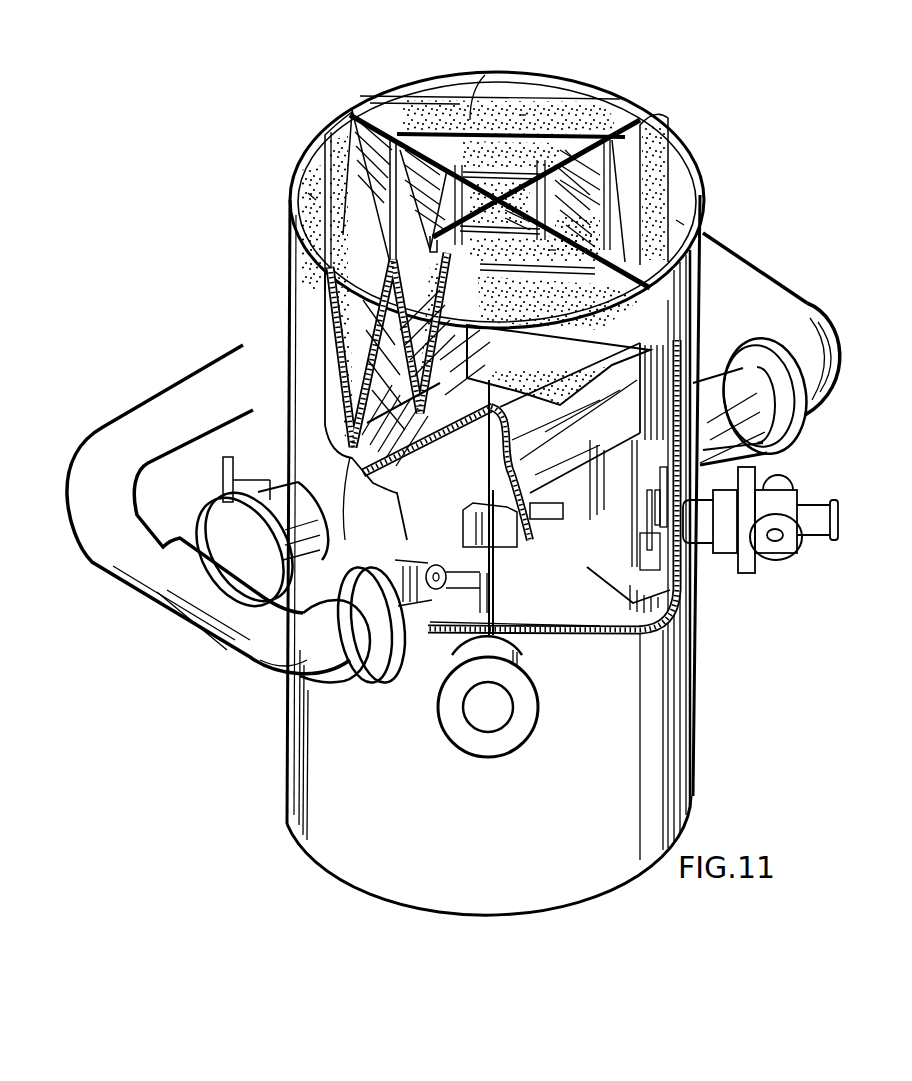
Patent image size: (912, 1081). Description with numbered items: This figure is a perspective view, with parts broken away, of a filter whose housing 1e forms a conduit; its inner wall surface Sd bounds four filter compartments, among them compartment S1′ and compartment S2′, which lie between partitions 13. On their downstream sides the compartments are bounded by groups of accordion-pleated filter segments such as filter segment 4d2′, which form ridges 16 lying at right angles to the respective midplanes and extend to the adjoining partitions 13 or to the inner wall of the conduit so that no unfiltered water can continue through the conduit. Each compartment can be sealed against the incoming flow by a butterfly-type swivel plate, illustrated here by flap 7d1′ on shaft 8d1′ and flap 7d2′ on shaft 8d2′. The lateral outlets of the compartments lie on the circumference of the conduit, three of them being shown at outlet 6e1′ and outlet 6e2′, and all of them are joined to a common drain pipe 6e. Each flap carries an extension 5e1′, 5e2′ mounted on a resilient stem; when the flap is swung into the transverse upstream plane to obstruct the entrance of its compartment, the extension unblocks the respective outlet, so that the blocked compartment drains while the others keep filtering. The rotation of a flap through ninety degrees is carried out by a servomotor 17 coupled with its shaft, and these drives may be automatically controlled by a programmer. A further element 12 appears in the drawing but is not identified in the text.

The housing 1e is at (683, 165).
The inner sleeve Sd is at (705, 316).
The partitions 13 is at (620, 112).
The ridges 16 is at (492, 150).
The compartment S2′ is at (680, 222).
The compartment S1′ is at (507, 316).
The accordion-pleated filter segment 4d2′ is at (555, 250).
The swivel plate 7d2′ is at (622, 567).
The swivel plate 7d1′ is at (500, 600).
The shaft 8d2′ is at (533, 540).
The extension 5e2′ is at (658, 475).
The extension 5e1′ is at (403, 577).
The shaft 8d1′ is at (480, 638).
The funnel 12 is at (373, 488).
The drain pipe 6e is at (163, 405).
The lateral outlet 6e1′ is at (395, 675).
The lateral outlet 6e2′ is at (705, 390).
The servomotor 17 is at (790, 558).